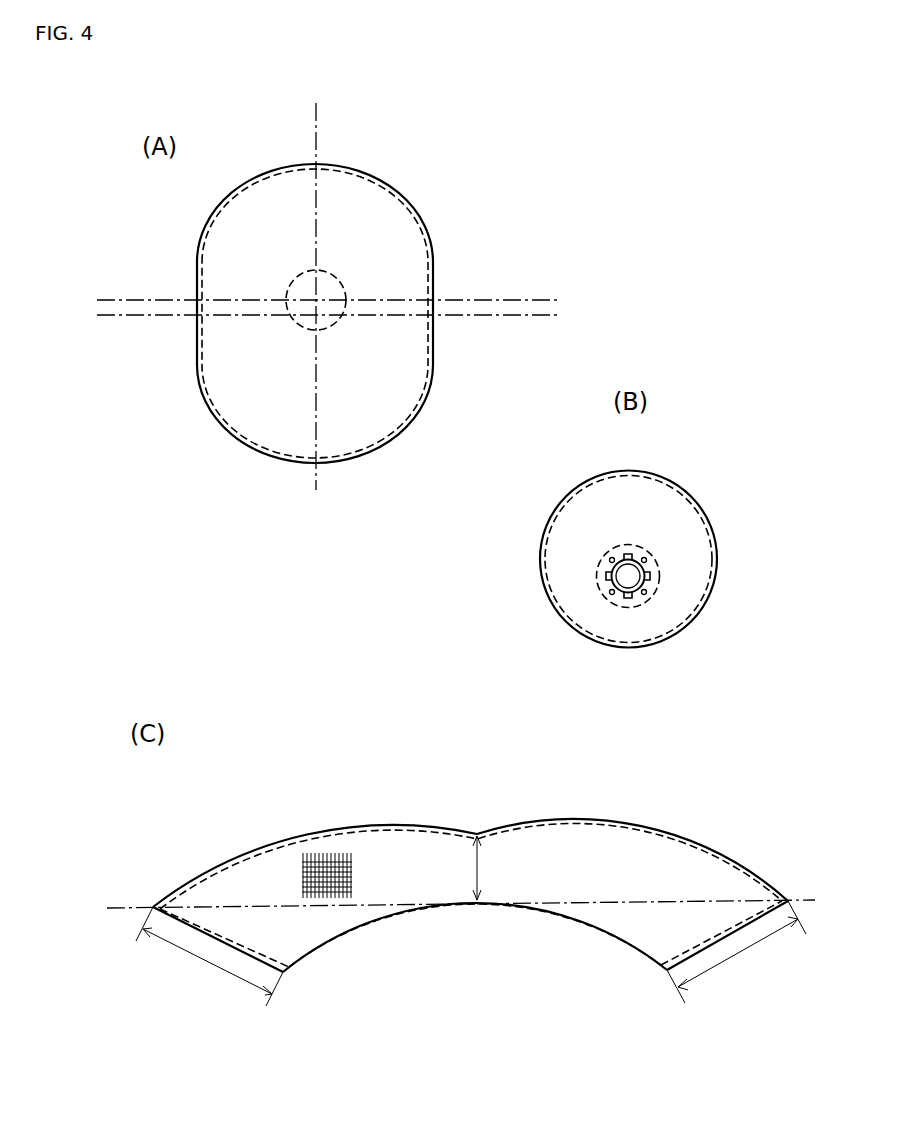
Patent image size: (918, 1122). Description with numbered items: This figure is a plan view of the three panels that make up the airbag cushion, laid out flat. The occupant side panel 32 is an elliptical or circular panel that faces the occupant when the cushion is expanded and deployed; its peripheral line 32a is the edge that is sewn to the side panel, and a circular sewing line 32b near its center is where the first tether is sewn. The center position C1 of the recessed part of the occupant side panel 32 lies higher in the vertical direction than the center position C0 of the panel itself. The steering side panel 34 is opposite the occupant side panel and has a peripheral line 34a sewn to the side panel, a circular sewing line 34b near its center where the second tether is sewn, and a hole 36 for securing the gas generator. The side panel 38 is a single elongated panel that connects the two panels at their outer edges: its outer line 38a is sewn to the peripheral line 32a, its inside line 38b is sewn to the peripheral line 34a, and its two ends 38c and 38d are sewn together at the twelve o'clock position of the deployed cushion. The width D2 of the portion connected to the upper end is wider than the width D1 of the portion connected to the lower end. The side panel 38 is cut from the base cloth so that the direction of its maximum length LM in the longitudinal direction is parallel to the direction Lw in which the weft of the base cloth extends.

The occupant side panel 32 is at (364, 313).
The peripheral line of the occupant side panel 32a is at (430, 338).
The circular sewing line near the center of the occupant side panel 32b is at (297, 325).
The center position of the occupant side panel C0 is at (317, 315).
The center position of the recessed part C1 is at (316, 300).
The steering side panel 34 is at (623, 581).
The peripheral line of the steering side panel 34a is at (567, 622).
The circular sewing line near the center of the steering side panel 34b is at (598, 570).
The hole 36 is at (630, 568).
The side panel 38 is at (470, 900).
The outer line of the side panel 38a is at (397, 828).
The inside line of the side panel 38b is at (588, 923).
The end of the side panel 38c is at (248, 950).
The end of the side panel 38d is at (695, 950).
The direction of maximum length LM is at (192, 905).
The weft direction Lw is at (300, 865).
The width of the portion connected to the lower end D1 is at (492, 868).
The width of the portion connected to the upper end D2 is at (471, 953).